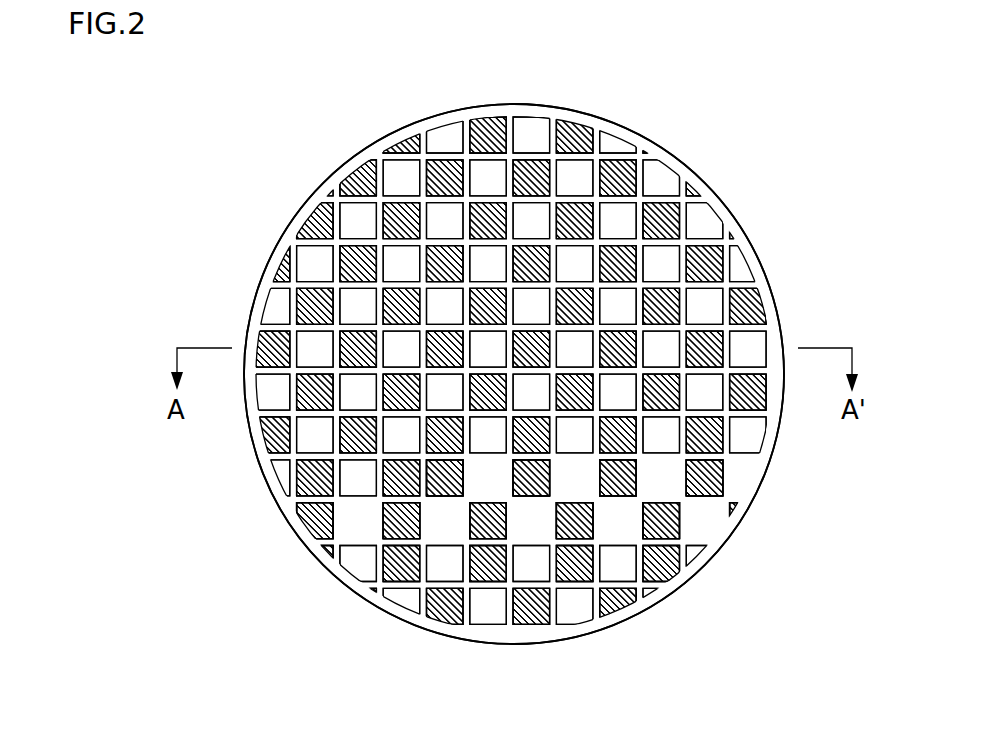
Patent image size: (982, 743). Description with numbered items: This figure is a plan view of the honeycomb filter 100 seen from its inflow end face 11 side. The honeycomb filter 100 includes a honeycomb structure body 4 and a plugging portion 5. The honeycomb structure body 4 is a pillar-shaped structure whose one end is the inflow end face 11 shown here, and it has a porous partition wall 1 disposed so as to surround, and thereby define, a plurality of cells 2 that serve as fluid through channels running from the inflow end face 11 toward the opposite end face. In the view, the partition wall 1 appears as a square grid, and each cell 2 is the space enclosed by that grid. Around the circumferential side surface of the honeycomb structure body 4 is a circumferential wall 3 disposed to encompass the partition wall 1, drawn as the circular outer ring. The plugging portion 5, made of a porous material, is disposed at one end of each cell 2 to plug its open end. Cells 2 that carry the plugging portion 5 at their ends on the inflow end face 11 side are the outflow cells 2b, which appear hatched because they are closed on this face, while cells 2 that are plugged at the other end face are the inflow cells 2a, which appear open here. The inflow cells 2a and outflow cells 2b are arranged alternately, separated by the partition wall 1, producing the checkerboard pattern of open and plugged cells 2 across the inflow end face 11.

The honeycomb filter 100 is at (846, 76).
The inflow end face 11 is at (314, 159).
The partition wall 1 is at (620, 203).
The cells 2 is at (560, 370).
The inflow cells 2a is at (658, 265).
The outflow cells 2b is at (658, 310).
The circumferential wall 3 is at (725, 535).
The honeycomb structure body 4 is at (790, 303).
The plugging portion 5 is at (528, 183).